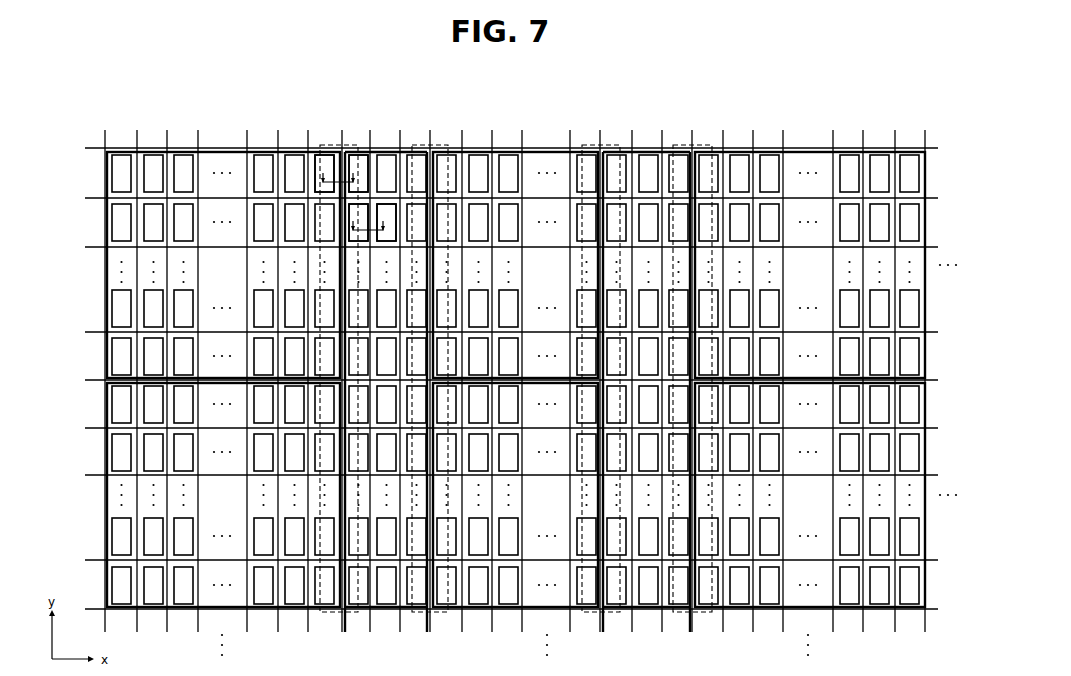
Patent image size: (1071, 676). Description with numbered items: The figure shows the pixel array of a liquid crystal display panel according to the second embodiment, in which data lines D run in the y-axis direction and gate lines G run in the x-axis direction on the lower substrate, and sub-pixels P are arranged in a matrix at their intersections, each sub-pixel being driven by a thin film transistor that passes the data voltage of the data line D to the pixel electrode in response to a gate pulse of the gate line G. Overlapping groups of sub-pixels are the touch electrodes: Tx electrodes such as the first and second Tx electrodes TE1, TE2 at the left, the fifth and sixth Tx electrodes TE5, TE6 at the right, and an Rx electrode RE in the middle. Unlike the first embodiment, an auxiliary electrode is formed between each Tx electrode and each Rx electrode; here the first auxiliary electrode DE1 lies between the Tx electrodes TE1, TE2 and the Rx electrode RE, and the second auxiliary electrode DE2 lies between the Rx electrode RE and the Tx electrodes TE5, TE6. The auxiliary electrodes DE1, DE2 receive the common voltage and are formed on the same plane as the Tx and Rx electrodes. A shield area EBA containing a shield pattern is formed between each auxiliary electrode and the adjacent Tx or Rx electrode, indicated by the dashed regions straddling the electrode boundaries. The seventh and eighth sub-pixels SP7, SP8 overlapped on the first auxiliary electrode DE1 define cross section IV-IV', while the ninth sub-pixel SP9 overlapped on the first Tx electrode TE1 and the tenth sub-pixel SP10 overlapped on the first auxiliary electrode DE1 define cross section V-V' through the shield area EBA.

The data line D is at (512, 372).
The gate line G is at (503, 378).
The sub-pixel P is at (120, 153).
The first Tx electrode TE1 is at (221, 152).
The second Tx electrode TE2 is at (106, 452).
The fifth Tx electrode TE5 is at (808, 152).
The sixth Tx electrode TE6 is at (852, 609).
The first auxiliary electrode DE1 is at (388, 152).
The second auxiliary electrode DE2 is at (645, 152).
The Rx electrode RE is at (545, 152).
The shield area EBA is at (342, 145).
The seventh sub-pixel SP7 is at (358, 205).
The eighth sub-pixel SP8 is at (388, 205).
The ninth sub-pixel SP9 is at (324, 158).
The tenth sub-pixel SP10 is at (356, 158).